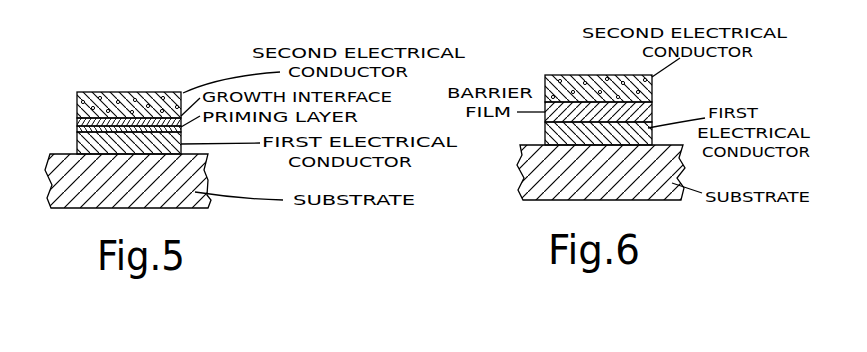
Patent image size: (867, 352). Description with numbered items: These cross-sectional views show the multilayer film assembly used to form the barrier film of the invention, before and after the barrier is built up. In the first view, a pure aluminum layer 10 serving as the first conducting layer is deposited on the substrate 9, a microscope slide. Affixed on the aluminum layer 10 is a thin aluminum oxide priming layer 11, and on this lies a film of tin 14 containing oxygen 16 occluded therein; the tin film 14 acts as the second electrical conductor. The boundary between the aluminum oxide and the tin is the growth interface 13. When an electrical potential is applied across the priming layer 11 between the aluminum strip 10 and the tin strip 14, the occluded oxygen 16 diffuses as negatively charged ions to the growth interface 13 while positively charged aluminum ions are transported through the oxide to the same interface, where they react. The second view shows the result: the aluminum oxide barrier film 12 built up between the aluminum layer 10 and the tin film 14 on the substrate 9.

In FIG. 5, the substrate 9 is at (60, 179).
In FIG. 6, the substrate 9 is at (673, 175).
In FIG. 5, the aluminum film strip 10 is at (95, 140).
In FIG. 6, the aluminum film strip 10 is at (652, 134).
In FIG. 5, the aluminum oxide priming layer 11 is at (77, 128).
In FIG. 6, the barrier film 12 is at (652, 110).
In FIG. 5, the growth interface 13 is at (77, 121).
In FIG. 5, the tin film 14 is at (77, 93).
In FIG. 6, the tin film 14 is at (652, 83).
In FIG. 5, the occluded oxygen 16 is at (147, 92).